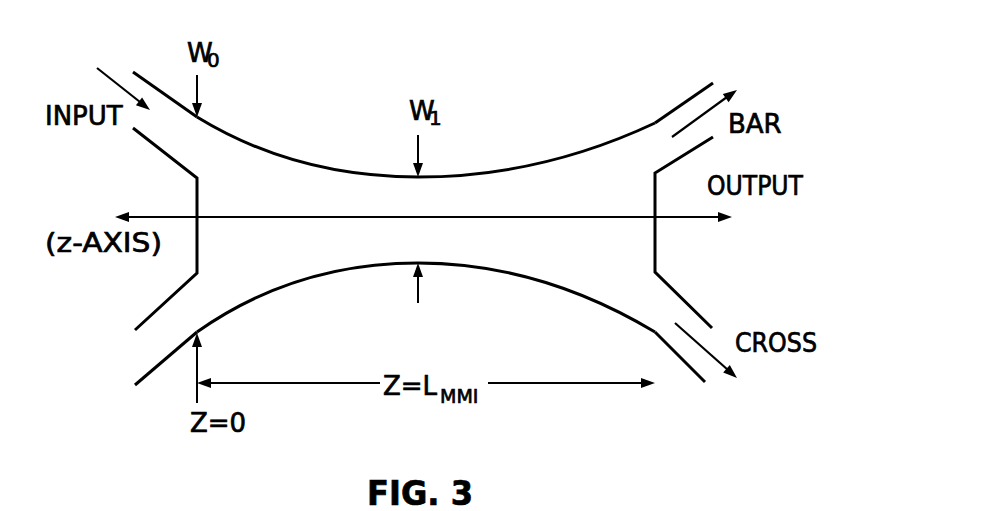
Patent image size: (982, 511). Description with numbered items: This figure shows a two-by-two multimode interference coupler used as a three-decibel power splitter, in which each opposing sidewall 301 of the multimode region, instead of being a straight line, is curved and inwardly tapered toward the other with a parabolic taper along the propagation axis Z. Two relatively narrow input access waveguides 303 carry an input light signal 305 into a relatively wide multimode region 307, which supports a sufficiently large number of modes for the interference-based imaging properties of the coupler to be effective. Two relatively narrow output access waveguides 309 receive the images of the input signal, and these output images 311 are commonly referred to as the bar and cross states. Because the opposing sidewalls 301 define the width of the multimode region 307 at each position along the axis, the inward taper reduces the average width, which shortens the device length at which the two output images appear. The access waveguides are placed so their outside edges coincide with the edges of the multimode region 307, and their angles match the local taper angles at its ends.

The opposing sidewall 301 is at (517, 168).
The input access waveguide 303 is at (155, 146).
The input light signal 305 is at (118, 84).
The multimode region 307 is at (391, 246).
The output access waveguide 309 is at (670, 110).
The output image 311 is at (733, 88).